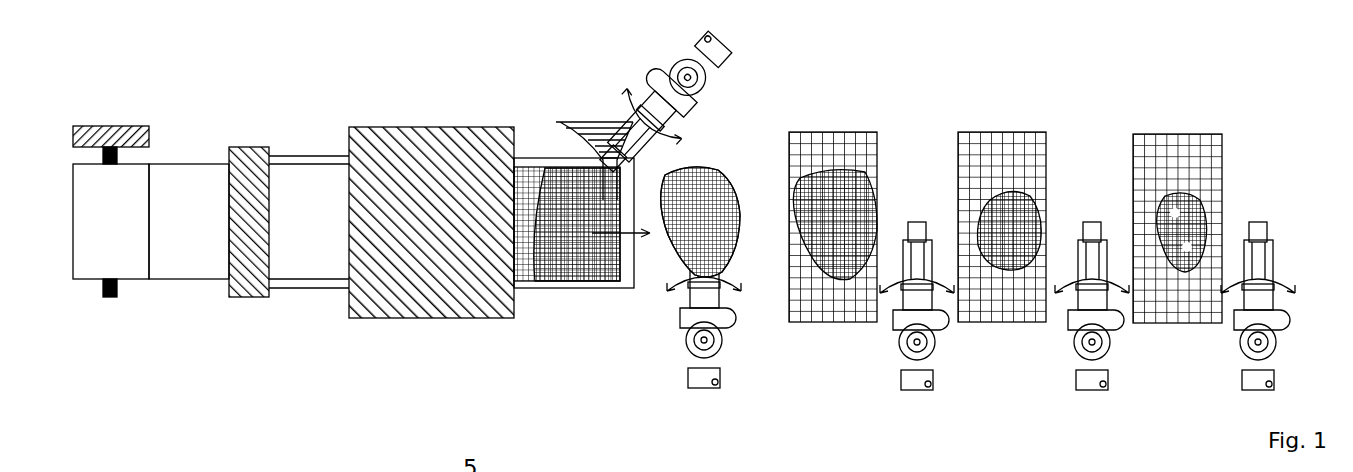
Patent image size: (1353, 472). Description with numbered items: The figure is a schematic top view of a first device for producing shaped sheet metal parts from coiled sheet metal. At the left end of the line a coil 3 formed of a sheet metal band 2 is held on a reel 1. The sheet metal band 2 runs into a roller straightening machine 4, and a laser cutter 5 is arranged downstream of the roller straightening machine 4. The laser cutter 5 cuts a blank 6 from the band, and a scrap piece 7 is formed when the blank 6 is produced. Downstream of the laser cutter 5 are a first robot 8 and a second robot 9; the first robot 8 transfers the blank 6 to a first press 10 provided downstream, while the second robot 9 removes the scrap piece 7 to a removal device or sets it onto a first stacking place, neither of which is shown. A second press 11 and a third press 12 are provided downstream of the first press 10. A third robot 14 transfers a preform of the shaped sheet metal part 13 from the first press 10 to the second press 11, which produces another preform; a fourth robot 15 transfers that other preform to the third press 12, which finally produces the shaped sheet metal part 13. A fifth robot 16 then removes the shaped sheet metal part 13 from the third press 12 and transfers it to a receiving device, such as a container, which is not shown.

The reel 1 is at (120, 126).
The sheet metal band 2 is at (190, 175).
The coil 3 is at (90, 205).
The roller straightening machine 4 is at (255, 148).
The laser cutter 5 is at (443, 135).
The blank 6 is at (588, 283).
The scrap piece 7 is at (604, 175).
The first robot 8 is at (722, 350).
The second robot 9 is at (706, 84).
The first press 10 is at (858, 137).
The second press 11 is at (1027, 137).
The third press 12 is at (1188, 140).
The shaped sheet metal part 13 is at (1197, 213).
The third robot 14 is at (937, 357).
The fourth robot 15 is at (1112, 355).
The fifth robot 16 is at (1275, 353).